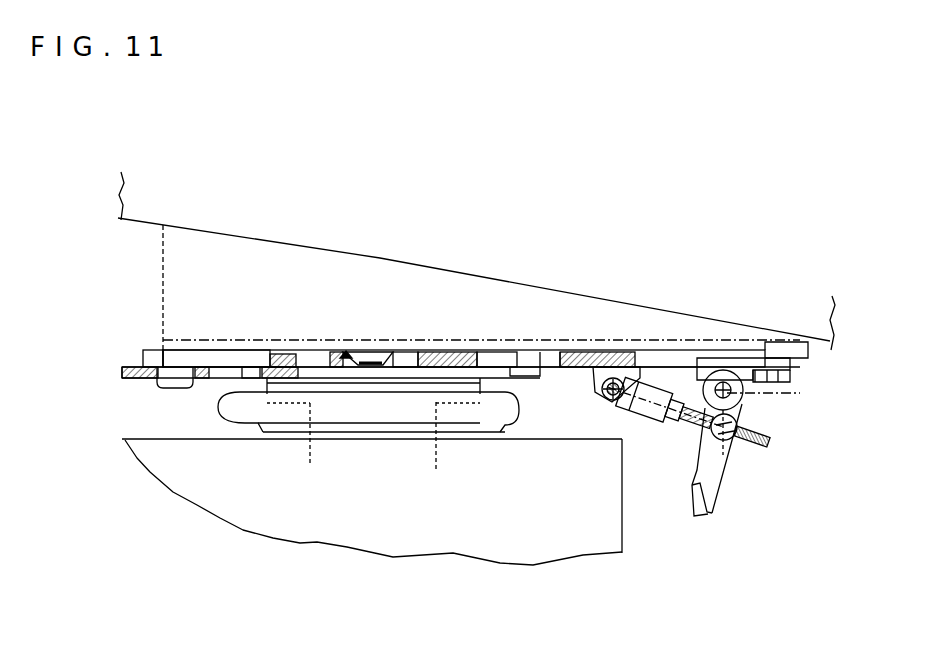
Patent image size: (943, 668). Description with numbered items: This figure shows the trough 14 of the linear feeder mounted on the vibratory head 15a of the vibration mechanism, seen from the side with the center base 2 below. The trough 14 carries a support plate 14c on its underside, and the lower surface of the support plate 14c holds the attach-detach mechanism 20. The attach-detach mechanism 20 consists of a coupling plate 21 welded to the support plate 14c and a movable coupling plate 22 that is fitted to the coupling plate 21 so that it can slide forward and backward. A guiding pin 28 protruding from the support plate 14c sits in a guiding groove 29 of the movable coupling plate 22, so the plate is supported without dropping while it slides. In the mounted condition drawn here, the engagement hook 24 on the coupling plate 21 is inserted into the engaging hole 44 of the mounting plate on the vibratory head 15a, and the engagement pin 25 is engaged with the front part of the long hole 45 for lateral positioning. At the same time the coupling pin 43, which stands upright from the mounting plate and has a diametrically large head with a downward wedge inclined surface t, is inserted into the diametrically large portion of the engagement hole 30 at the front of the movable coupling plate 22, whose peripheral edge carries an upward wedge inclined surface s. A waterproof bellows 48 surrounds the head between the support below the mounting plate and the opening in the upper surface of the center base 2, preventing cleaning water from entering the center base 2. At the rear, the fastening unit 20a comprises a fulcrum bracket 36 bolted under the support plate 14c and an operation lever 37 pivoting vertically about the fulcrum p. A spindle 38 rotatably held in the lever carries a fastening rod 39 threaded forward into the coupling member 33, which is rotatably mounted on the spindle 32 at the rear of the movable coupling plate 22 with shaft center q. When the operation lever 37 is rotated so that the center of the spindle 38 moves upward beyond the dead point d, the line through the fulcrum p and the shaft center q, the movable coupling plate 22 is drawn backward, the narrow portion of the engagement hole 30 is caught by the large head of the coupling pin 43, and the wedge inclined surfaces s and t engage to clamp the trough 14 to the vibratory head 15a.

The center base 2 is at (622, 531).
The trough 14 is at (476, 261).
The support plate 14c is at (163, 259).
The vibratory head 15a is at (440, 458).
The attach-detach mechanism 20 is at (313, 338).
The fastening unit 20a is at (661, 428).
The coupling plate 21 is at (258, 352).
The movable coupling plate 22 is at (450, 351).
The engagement hook 24 is at (173, 389).
The engagement pin 25 is at (245, 384).
The guiding pin 28 is at (527, 378).
The guiding groove 29 is at (492, 360).
The engagement hole 30 is at (410, 352).
The spindle 32 is at (595, 393).
The coupling member 33 is at (647, 384).
The fulcrum bracket 36 is at (765, 342).
The operation lever 37 is at (708, 503).
The spindle 38 is at (724, 460).
The fastening rod 39 is at (761, 436).
The coupling pin 43 is at (381, 352).
The engaging hole 44 is at (162, 357).
The long hole 45 is at (221, 366).
The waterproof bellows 48 is at (221, 420).
The wedge inclined surface s is at (349, 350).
The wedge inclined surface t is at (353, 367).
The shaft center q is at (598, 362).
The fulcrum p is at (718, 358).
The dead point d is at (787, 395).